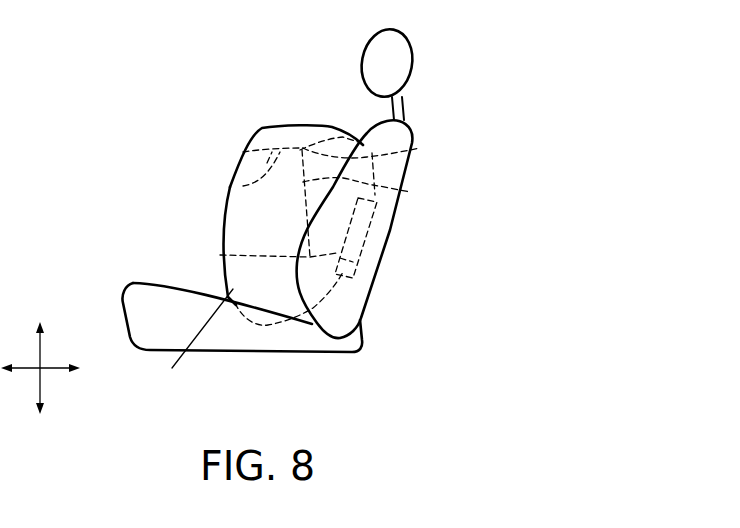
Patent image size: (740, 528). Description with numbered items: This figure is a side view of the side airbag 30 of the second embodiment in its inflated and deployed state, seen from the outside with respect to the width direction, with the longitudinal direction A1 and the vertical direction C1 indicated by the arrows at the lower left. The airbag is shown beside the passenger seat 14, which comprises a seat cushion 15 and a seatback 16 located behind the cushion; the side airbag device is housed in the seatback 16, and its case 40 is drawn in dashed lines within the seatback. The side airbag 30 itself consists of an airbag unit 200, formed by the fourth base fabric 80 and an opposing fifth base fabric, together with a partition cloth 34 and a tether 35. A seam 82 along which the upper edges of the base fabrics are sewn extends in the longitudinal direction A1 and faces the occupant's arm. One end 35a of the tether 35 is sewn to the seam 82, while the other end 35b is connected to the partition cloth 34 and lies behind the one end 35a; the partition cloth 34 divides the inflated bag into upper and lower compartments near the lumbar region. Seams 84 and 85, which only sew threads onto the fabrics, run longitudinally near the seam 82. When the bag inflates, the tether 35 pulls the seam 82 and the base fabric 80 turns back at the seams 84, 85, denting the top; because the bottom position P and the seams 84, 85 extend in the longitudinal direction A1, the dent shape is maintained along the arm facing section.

The passenger seat 14 is at (358, 367).
The seat cushion 15 is at (242, 337).
The seatback 16 is at (367, 310).
The side airbag 30 is at (313, 117).
The partition cloth 34 is at (220, 255).
The tether 35 is at (410, 192).
The one end of tether 35a is at (420, 148).
The other end of tether 35b is at (353, 262).
The case 40 is at (372, 228).
The fourth base fabric 80 is at (230, 222).
The seam 82 is at (267, 163).
The seam 84 is at (268, 101).
The seam 85 is at (277, 125).
The airbag unit 200 is at (190, 339).
The bottom position P is at (243, 186).
The vertical direction C1 is at (42, 349).
The longitudinal direction A1 is at (60, 368).